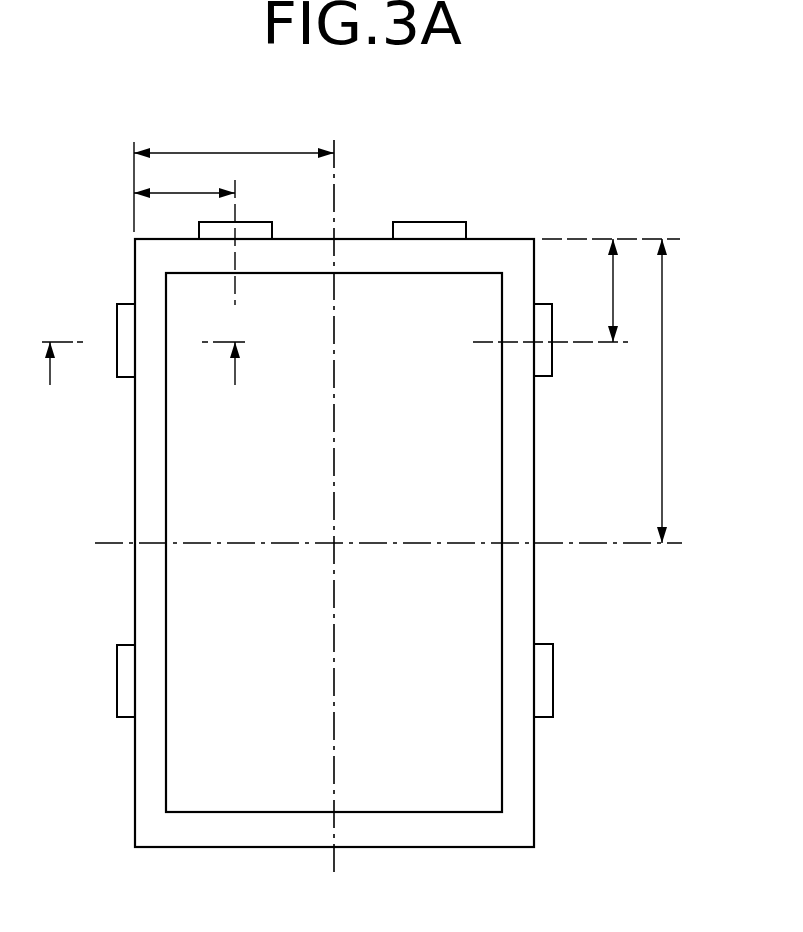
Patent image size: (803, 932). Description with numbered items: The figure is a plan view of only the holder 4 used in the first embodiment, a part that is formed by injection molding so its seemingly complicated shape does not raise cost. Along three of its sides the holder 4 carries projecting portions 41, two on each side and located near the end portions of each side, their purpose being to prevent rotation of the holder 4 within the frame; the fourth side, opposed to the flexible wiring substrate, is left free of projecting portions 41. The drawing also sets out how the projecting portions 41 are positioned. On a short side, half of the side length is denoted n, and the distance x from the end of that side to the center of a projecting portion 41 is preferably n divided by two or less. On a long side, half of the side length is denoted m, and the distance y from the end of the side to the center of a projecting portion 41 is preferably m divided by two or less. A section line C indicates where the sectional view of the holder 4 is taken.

The holder 4 is at (493, 248).
The projecting portion 41 is at (268, 237).
The half length of the short side n is at (234, 179).
The distance from end portion of short side to center of projecting portion x is at (184, 236).
The distance from end portion of long side to center of projecting portion y is at (576, 290).
The half length of the long side m is at (646, 391).
The section line C- C is at (143, 384).